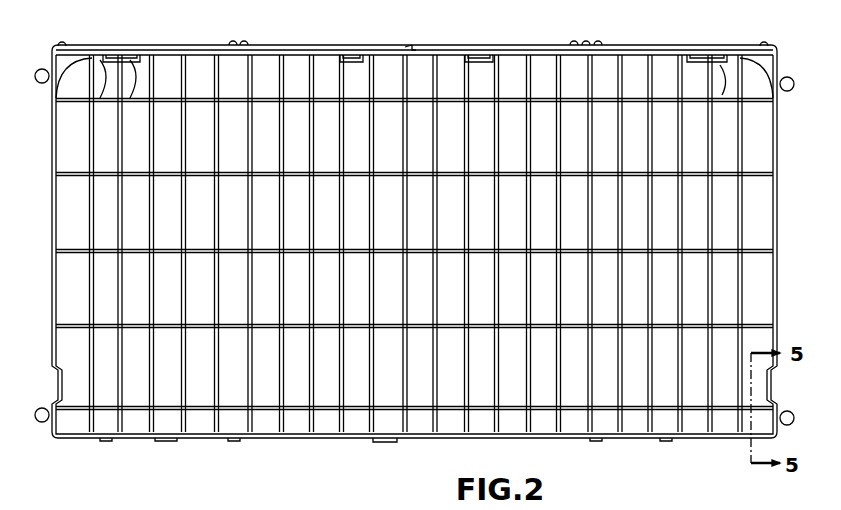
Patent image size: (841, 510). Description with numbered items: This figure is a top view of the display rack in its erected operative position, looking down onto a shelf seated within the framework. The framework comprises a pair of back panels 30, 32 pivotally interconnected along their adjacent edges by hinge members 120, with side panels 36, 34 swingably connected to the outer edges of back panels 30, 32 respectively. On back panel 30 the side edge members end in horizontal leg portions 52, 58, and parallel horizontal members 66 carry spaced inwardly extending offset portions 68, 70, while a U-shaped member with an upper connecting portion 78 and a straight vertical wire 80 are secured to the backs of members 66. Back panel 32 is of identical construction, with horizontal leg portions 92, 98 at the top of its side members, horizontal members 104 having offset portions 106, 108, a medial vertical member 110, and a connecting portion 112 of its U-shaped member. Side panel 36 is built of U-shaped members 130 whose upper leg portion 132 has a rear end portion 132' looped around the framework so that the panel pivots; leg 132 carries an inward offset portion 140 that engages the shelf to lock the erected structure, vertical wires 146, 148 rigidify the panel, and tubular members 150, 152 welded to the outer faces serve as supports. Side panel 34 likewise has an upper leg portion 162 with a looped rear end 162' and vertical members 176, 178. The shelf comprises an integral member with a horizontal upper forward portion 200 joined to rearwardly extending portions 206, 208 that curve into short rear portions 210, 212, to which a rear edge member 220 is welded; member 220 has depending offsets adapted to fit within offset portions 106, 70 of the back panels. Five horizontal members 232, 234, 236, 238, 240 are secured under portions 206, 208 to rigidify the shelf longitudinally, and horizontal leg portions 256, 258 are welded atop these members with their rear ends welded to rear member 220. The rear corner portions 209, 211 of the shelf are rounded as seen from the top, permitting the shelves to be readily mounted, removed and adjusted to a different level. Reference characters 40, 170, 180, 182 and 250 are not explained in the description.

The back panel 30 is at (232, 43).
The back panel 32 is at (573, 43).
The side panel 34 is at (782, 76).
The side panel 36 is at (40, 68).
The grid panel 40 is at (446, 440).
The horizontally disposed leg portion 52 is at (132, 46).
The horizontally extending top leg portion 58 is at (284, 45).
The horizontal members 66 is at (388, 58).
The inwardly extending offset portion 68 is at (136, 91).
The inwardly extending offset portion 70 is at (354, 64).
The upper horizontally extending connecting portion 78 is at (196, 58).
The vertically extending member 80 is at (242, 44).
The horizontally extending leg portion 92 is at (505, 45).
The horizontally extending leg portion 98 is at (681, 45).
The horizontally disposed members 104 is at (448, 58).
The inwardly extending offset portion 106 is at (480, 64).
The inwardly extending offset portion 108 is at (697, 64).
The vertically extending member 110 is at (598, 44).
The connecting portion 112 is at (562, 58).
The hinge members 120 is at (416, 46).
The U-shaped members 130 is at (52, 444).
The upper leg portion 132 is at (37, 149).
The rear end portion 132' is at (75, 31).
The inwardly extending offset portion 140 is at (64, 386).
The vertically extending member 146 is at (52, 206).
The vertically extending member 148 is at (52, 292).
The tubular member 150 is at (54, 86).
The tubular member 152 is at (36, 410).
The upper leg portion 162 is at (799, 160).
The rear end 162' is at (752, 31).
The right side notch 170 is at (768, 394).
The vertically extending member 176 is at (780, 207).
The vertically extending member 178 is at (780, 296).
The right upper hinge portion 180 is at (794, 92).
The lower right pivot pin 182 is at (792, 426).
The upper forward portion 200 is at (320, 440).
The rearwardly extending portion 206 is at (768, 210).
The rearwardly extending portion 208 is at (70, 186).
The rear corner portion 209 is at (760, 66).
The portion 210 is at (728, 80).
The rear corner portion 211 is at (62, 105).
The short extending portion 212 is at (102, 90).
The rear edge member 220 is at (258, 58).
The horizontally extending member 232 is at (506, 406).
The horizontally extending member 234 is at (506, 325).
The horizontally extending member 236 is at (506, 250).
The horizontally extending member 238 is at (506, 172).
The horizontally extending member 240 is at (506, 98).
The bottom foot 250 is at (597, 440).
The horizontally extending leg portion 256 is at (598, 340).
The horizontally extending leg portion 258 is at (628, 364).